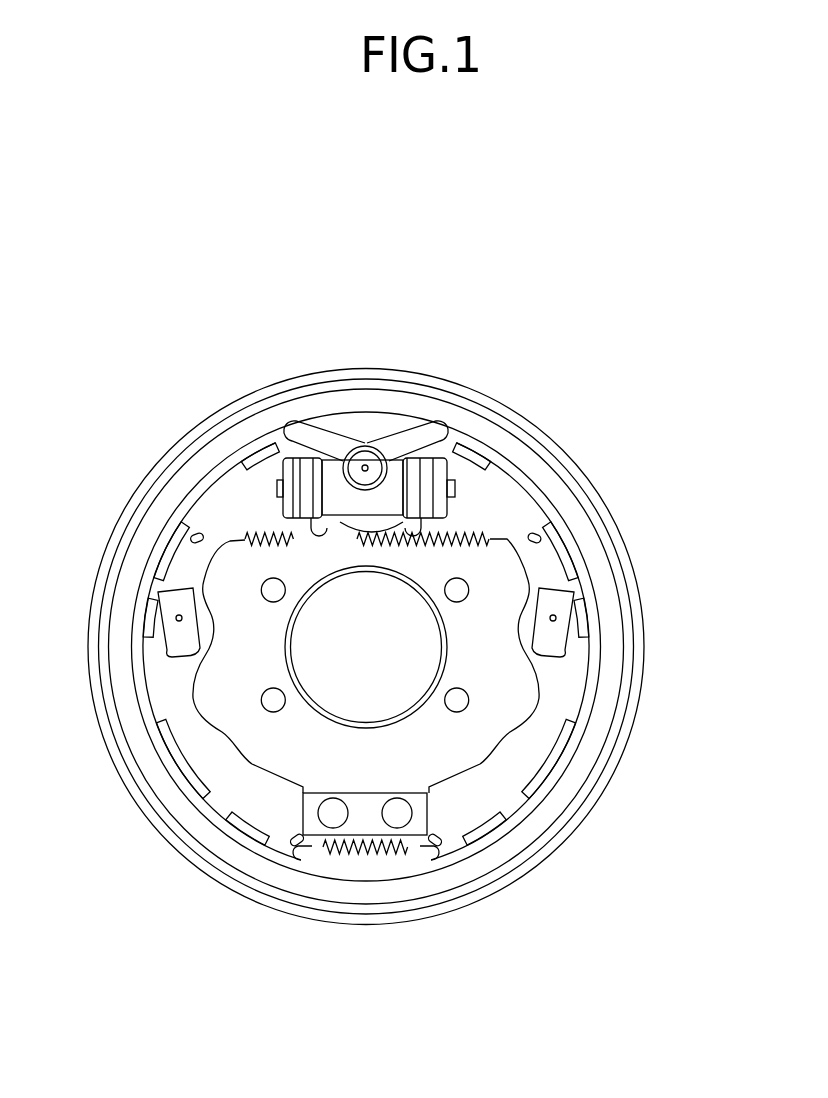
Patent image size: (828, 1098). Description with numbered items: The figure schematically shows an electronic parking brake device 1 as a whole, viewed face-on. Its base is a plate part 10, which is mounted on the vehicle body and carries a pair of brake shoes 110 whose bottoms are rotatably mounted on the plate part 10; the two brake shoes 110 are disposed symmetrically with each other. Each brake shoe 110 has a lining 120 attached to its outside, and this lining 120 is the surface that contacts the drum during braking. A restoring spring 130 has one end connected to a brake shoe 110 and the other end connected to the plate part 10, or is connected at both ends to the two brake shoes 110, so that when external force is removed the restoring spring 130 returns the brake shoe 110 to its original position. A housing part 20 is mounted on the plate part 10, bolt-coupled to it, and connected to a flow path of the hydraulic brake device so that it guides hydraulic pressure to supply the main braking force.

The electronic parking brake device 1 is at (675, 213).
The plate part 10 is at (512, 398).
The housing part 20 is at (362, 428).
The brake shoe 110 is at (497, 490).
The lining 120 is at (572, 590).
The restoring spring 130 is at (228, 573).